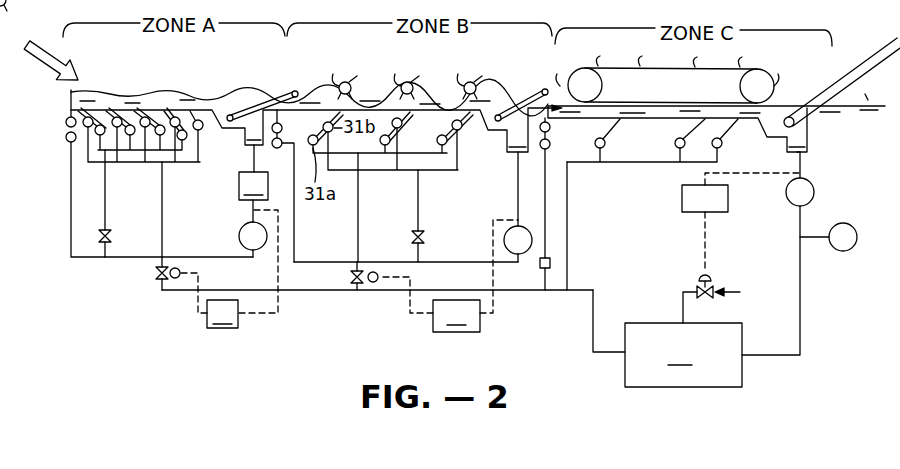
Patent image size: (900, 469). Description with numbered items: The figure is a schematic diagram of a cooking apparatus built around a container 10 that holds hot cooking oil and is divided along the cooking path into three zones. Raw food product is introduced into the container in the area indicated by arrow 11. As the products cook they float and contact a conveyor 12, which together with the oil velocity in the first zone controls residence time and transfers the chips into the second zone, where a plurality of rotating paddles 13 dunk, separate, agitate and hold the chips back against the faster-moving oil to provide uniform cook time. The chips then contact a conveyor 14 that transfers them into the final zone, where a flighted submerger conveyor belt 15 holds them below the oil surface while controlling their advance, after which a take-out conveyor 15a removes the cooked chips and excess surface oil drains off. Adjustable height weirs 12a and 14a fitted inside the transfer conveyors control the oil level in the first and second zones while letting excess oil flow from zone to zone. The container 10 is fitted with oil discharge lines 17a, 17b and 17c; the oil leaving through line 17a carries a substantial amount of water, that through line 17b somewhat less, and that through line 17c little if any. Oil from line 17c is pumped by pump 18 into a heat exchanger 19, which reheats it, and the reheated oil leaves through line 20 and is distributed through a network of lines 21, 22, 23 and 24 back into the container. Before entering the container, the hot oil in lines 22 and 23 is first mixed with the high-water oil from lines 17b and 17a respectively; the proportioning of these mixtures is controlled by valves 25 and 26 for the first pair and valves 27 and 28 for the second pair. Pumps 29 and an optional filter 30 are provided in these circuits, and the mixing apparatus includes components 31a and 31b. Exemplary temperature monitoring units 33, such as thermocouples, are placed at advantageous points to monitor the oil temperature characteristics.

The container 10 is at (70, 90).
The arrow 11 is at (27, 42).
The conveyor 12 is at (276, 92).
The adjustable height weir 12a is at (300, 92).
The rotating paddles 13 is at (347, 85).
The conveyor 14 is at (539, 95).
The adjustable height weir 14a is at (532, 73).
The flighted submerger conveyor belt 15 is at (610, 68).
The take-out conveyor 15a is at (891, 54).
The oil discharge line 17a is at (257, 150).
The oil discharge line 17b is at (518, 172).
The oil discharge line 17c is at (803, 160).
The pump 18 is at (814, 190).
The heat exchanger 19 is at (712, 280).
The line 20 is at (593, 314).
The line 21 is at (567, 240).
The line 22 is at (358, 234).
The line 23 is at (162, 236).
The line 24 is at (553, 162).
The valve 25 is at (350, 277).
The valve 26 is at (425, 238).
The valve 27 is at (155, 277).
The valve 28 is at (112, 237).
The pump 29 is at (239, 238).
The filter 30 is at (253, 172).
The mixing apparatus component 31a is at (117, 132).
The mixing apparatus component 31b is at (146, 132).
The temperature monitoring unit 33 is at (853, 228).